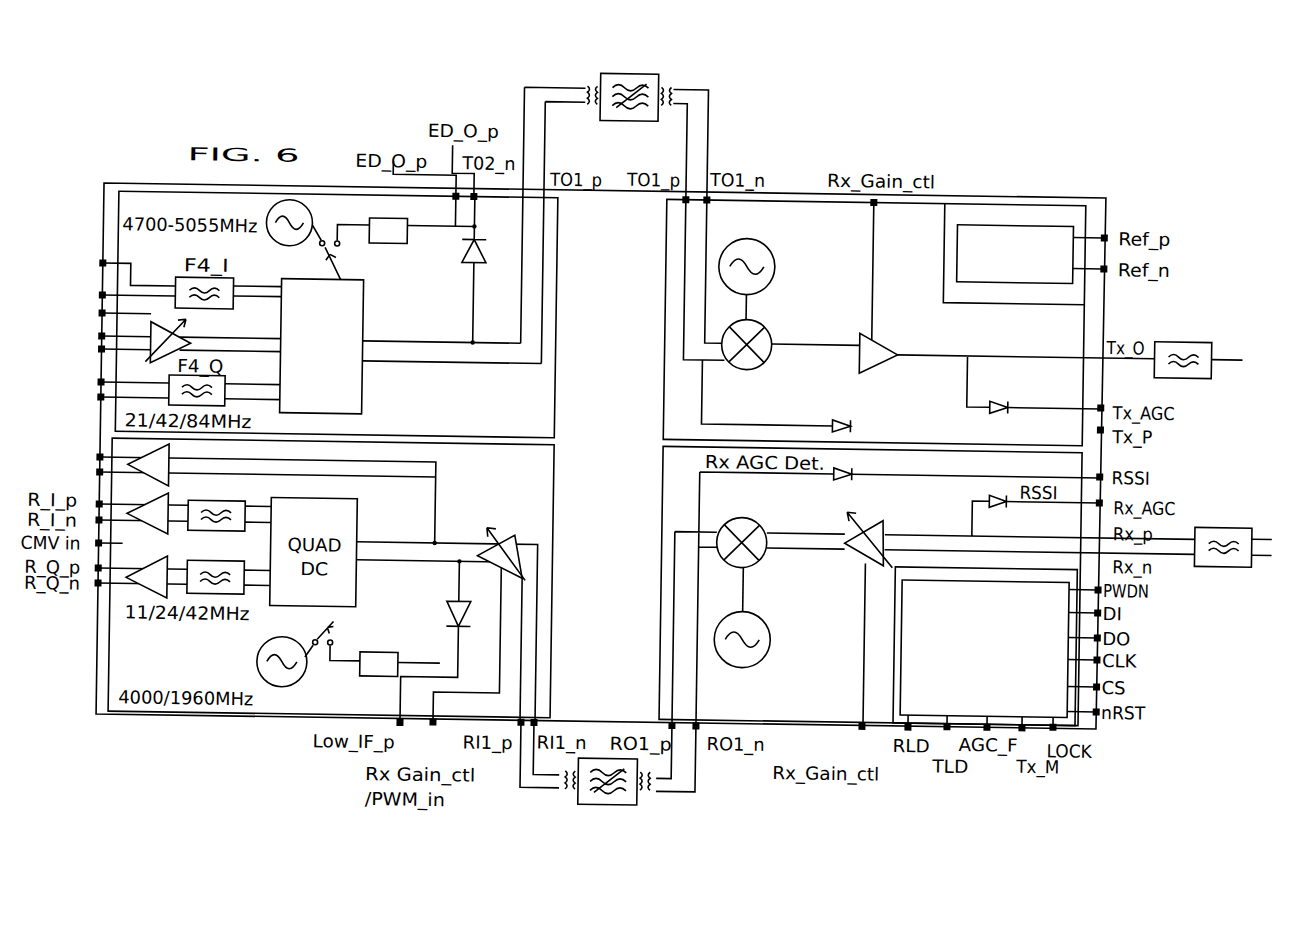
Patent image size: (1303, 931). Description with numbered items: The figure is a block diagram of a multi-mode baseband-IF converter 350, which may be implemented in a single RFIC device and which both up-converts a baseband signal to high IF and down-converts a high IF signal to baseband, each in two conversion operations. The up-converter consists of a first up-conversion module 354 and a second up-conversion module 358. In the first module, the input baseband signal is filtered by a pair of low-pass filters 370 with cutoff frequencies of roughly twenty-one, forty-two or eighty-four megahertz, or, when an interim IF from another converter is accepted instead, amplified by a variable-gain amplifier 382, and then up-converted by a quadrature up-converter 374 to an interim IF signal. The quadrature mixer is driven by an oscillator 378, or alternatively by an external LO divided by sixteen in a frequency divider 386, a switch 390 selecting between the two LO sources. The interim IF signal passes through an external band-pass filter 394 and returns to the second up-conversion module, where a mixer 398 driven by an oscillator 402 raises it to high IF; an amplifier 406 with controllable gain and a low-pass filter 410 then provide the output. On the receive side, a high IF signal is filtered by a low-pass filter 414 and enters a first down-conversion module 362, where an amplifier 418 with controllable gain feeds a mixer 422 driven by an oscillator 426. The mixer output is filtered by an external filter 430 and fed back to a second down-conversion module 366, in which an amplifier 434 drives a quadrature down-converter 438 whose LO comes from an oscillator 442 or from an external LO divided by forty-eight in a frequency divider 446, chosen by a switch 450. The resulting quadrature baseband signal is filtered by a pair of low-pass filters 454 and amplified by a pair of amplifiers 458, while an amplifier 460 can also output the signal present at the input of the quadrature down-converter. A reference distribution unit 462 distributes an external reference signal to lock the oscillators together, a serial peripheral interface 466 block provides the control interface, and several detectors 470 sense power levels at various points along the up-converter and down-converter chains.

The multi-mode baseband-IF converter 350 is at (1131, 158).
The first up-conversion module 354 is at (559, 304).
The second up-conversion module 358 is at (667, 379).
The first down-conversion module 362 is at (667, 614).
The second down-conversion module 366 is at (558, 531).
The low-pass filters 370 is at (164, 279).
The quadrature up-converter 374 is at (365, 392).
The oscillator 378 is at (274, 240).
The variable-gain amplifier 382 is at (183, 330).
The 1:16 frequency divider 386 is at (408, 239).
The switch 390 is at (332, 259).
The band-pass filter 394 is at (600, 66).
The mixer 398 is at (768, 322).
The oscillator 402 is at (777, 257).
The amplifier 406 is at (886, 352).
The low-pass filter 410 is at (1198, 363).
The low-pass filter 414 is at (1225, 511).
The amplifier 418 is at (889, 513).
The mixer 422 is at (762, 514).
The oscillator 426 is at (770, 614).
The filter 430 is at (646, 797).
The amplifier 434 is at (508, 526).
The quadrature down-converter 438 is at (362, 580).
The oscillator 442 is at (266, 656).
The 1:48 frequency divider 446 is at (376, 672).
The switch 450 is at (327, 626).
The low-pass filters 454 is at (254, 560).
The amplifiers 458 is at (148, 560).
The amplifier 460 is at (150, 449).
The reference distribution unit 462 is at (988, 210).
The serial peripheral interface 466 is at (1058, 689).
The detectors 470 is at (483, 266).